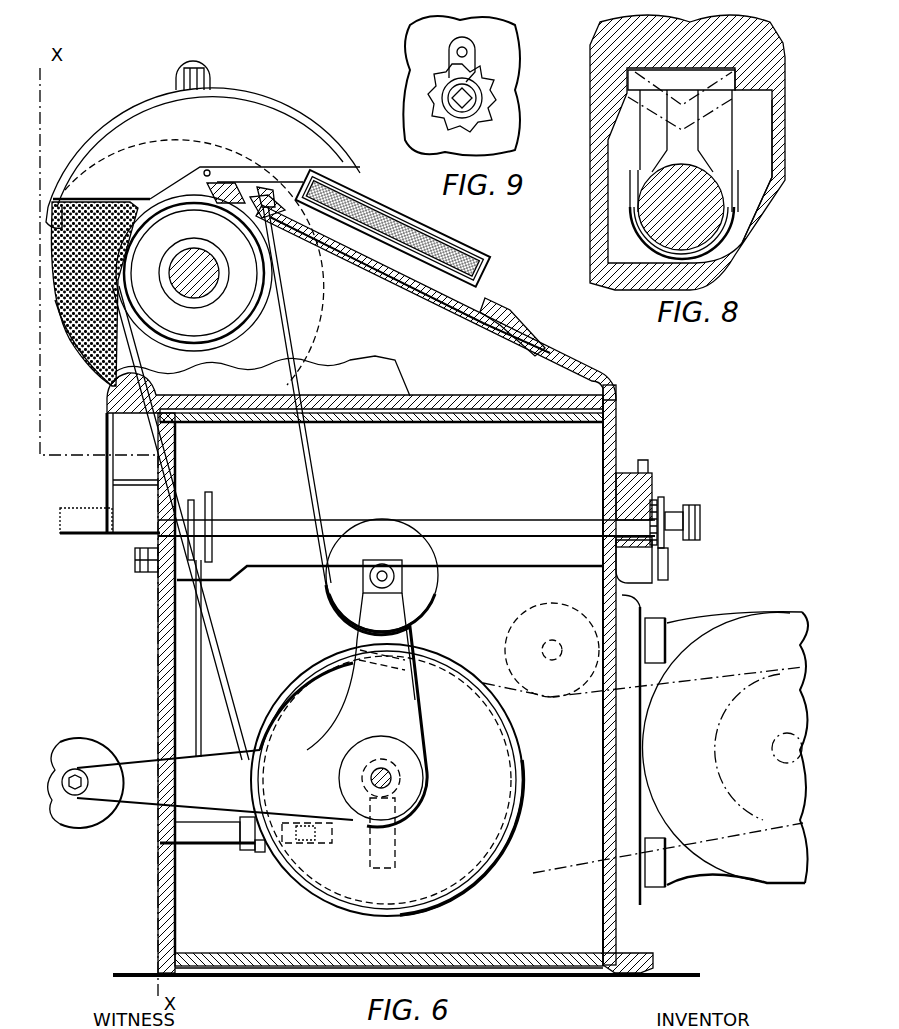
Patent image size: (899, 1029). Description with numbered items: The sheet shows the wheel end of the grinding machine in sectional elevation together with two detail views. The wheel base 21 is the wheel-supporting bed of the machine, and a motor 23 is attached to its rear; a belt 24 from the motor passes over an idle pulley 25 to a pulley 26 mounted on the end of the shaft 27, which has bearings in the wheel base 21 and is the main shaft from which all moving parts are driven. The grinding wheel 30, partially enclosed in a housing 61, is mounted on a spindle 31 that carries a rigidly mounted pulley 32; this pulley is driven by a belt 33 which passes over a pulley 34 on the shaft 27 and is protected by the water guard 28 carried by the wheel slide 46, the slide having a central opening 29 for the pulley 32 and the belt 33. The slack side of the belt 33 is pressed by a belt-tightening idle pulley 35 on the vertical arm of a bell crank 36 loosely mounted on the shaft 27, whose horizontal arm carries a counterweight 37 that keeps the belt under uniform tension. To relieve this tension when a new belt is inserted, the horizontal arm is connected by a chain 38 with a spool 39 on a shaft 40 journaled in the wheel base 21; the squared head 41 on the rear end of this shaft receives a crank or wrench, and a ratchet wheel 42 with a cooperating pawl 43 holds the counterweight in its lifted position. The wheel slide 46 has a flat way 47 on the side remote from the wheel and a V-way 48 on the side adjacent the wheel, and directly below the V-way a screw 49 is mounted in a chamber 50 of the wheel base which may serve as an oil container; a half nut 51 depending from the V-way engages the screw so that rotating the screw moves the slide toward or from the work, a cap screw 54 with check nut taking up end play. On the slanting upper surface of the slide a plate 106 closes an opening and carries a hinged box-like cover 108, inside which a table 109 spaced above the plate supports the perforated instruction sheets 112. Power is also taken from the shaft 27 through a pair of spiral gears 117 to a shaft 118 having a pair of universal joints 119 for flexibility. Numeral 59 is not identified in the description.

In FIG. 6, the wheel base 21 is at (520, 975).
In FIG. 6, the motor 23 is at (780, 628).
In FIG. 6, the belt 24 is at (575, 862).
In FIG. 6, the idle pulley 25 is at (545, 603).
In FIG. 6, the pulley 26 is at (483, 708).
In FIG. 6, the shaft 27 is at (393, 776).
In FIG. 6, the water guard 28 is at (70, 508).
In FIG. 6, the opening 29 is at (262, 281).
In FIG. 6, the grinding wheel 30 is at (100, 360).
In FIG. 6, the spindle 31 is at (200, 285).
In FIG. 6, the pulley 32 is at (235, 318).
In FIG. 6, the belt 33 is at (312, 490).
In FIG. 6, the pulley 34 is at (308, 688).
In FIG. 6, the belt-tightening idle pulley 35 is at (430, 580).
In FIG. 6, the bell crank 36 is at (318, 752).
In FIG. 6, the counterweight 37 is at (90, 750).
In FIG. 6, the chain 38 is at (212, 600).
In FIG. 6, the spool 39 is at (210, 500).
In FIG. 6, the shaft 40 is at (258, 523).
In FIG. 6, the squared head 41 is at (665, 520).
In FIG. 9, the squared head 41 is at (470, 95).
In FIG. 6, the ratchet wheel 42 is at (668, 548).
In FIG. 9, the ratchet wheel 42 is at (485, 112).
In FIG. 6, the pawl 43 is at (656, 515).
In FIG. 9, the pawl 43 is at (470, 58).
In FIG. 6, the wheel slide 46 is at (608, 385).
In FIG. 6, the flat way 47 is at (232, 420).
In FIG. 6, the V-way 48 is at (120, 470).
In FIG. 8, the V-way 48 is at (742, 36).
In FIG. 8, the screw 49 is at (670, 242).
In FIG. 6, the chamber 50 is at (540, 566).
In FIG. 8, the chamber 50 is at (752, 172).
In FIG. 8, the half nut 51 is at (720, 128).
In FIG. 6, the cap screw 54 is at (705, 522).
In FIG. 6, the bolt 59 is at (140, 560).
In FIG. 6, the housing 61 is at (290, 120).
In FIG. 6, the plate 106 is at (495, 300).
In FIG. 6, the box-like cover 108 is at (419, 213).
In FIG. 6, the table 109 is at (393, 265).
In FIG. 6, the instruction sheets 112 is at (403, 206).
In FIG. 6, the spiral gears 117 is at (388, 838).
In FIG. 6, the shaft 118 is at (165, 835).
In FIG. 6, the universal joints 119 is at (315, 835).